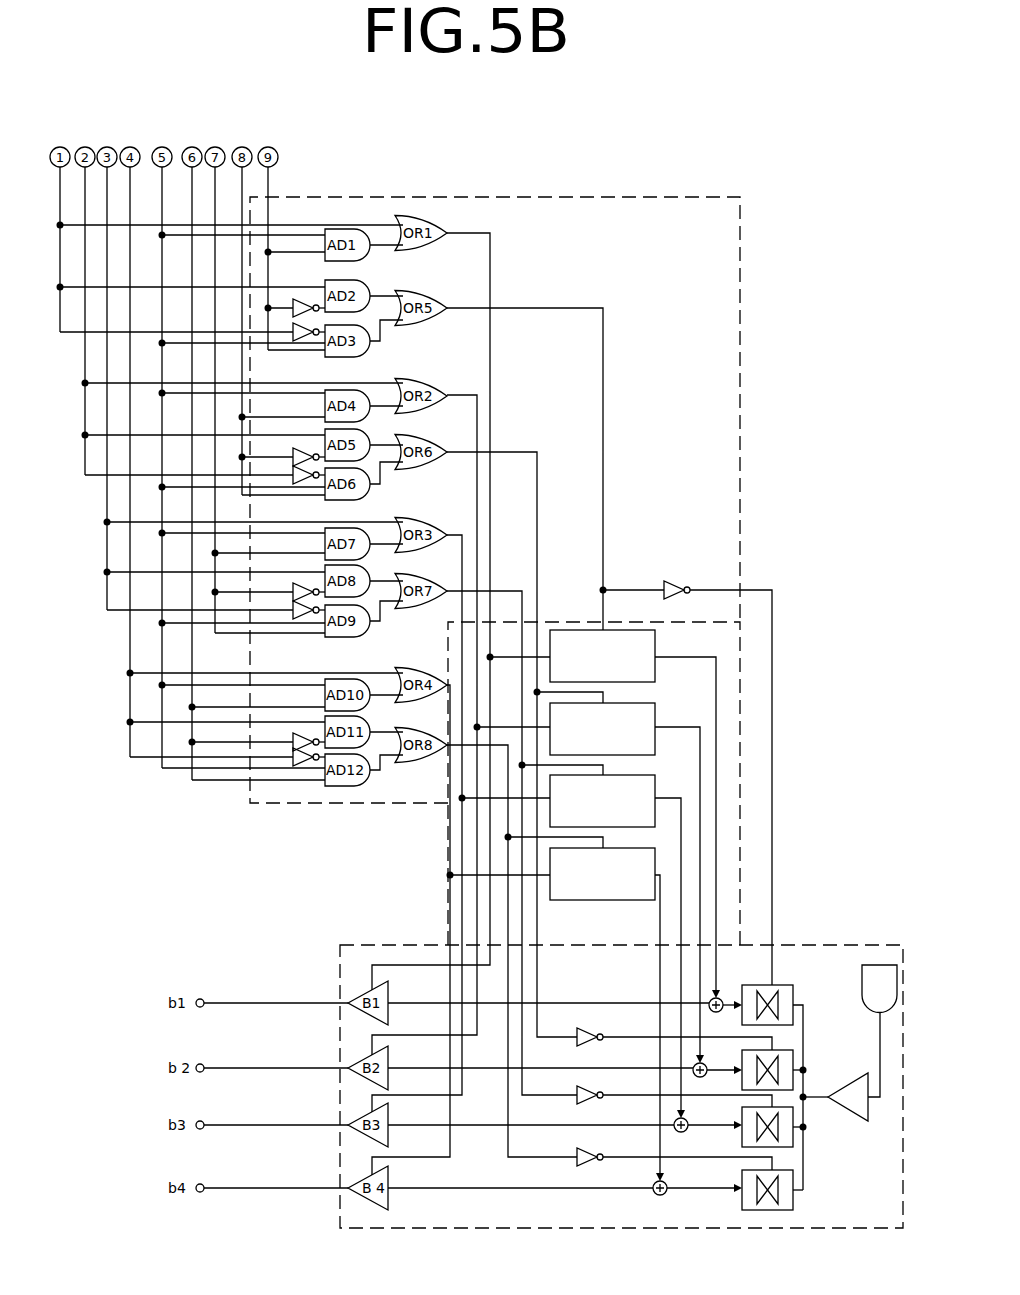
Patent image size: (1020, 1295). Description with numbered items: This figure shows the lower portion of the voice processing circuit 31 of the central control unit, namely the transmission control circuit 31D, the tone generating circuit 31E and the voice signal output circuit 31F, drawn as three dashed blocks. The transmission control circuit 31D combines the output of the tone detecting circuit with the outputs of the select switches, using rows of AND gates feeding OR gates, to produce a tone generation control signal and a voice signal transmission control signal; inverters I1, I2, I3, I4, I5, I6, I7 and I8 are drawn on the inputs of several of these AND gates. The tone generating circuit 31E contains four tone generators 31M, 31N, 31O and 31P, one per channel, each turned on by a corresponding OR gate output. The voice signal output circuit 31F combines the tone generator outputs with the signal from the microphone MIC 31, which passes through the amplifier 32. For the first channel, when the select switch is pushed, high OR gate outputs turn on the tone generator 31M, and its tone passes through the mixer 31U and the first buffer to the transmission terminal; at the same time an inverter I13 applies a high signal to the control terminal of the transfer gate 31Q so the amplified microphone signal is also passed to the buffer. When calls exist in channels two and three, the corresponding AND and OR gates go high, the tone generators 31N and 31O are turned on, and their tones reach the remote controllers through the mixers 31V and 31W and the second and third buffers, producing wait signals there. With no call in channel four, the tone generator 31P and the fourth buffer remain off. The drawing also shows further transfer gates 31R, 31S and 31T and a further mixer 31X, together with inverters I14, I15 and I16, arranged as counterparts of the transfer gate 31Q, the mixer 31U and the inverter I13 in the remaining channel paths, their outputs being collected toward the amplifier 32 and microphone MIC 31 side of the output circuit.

The transmission control circuit 31D is at (740, 415).
The tone generating circuit 31E is at (740, 752).
The voice signal output circuit 31F is at (787, 945).
The tone generator 31M is at (655, 650).
The tone generator 31N is at (655, 722).
The tone generator 31O is at (655, 792).
The tone generator 31P is at (616, 900).
The transfer gate 31Q is at (793, 991).
The gate (multiplier) 31R is at (793, 1055).
The gate (multiplier) 31S is at (793, 1140).
The gate (multiplier) 31T is at (793, 1196).
The mixer 31U is at (722, 1017).
The mixer 31V is at (714, 1080).
The mixer 31W is at (705, 1135).
The adder 31X is at (697, 1198).
The voice processing circuit 31 is at (879, 989).
The amplifier 32 is at (855, 1113).
The inverter I1 is at (309, 304).
The inverter I2 is at (309, 328).
The inverter I3 is at (309, 452).
The inverter I4 is at (294, 472).
The inverter I5 is at (308, 587).
The inverter I6 is at (309, 607).
The inverter I7 is at (309, 738).
The inverter I8 is at (291, 763).
The inverter I13 is at (717, 774).
The inverter I14 is at (674, 1033).
The inverter I15 is at (674, 1090).
The inverter I16 is at (674, 1153).